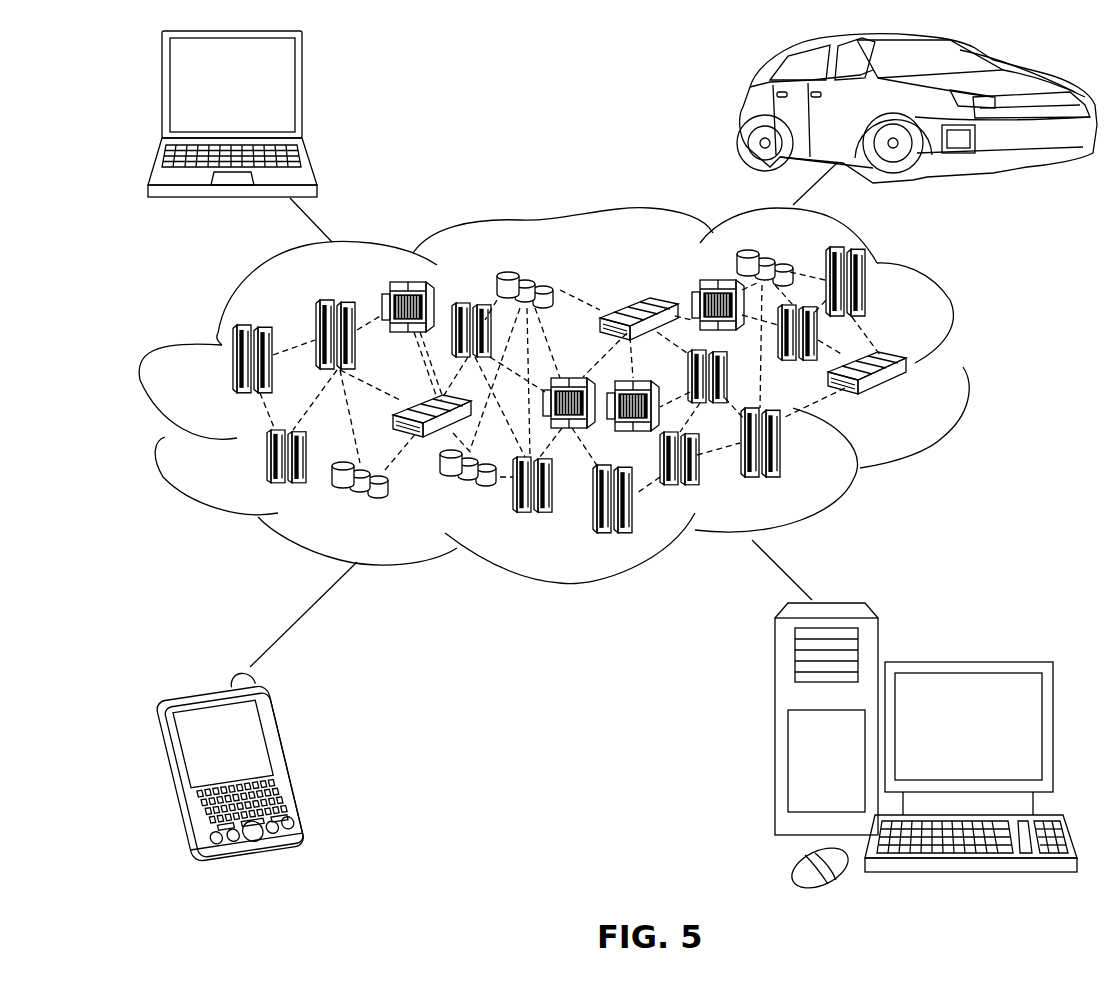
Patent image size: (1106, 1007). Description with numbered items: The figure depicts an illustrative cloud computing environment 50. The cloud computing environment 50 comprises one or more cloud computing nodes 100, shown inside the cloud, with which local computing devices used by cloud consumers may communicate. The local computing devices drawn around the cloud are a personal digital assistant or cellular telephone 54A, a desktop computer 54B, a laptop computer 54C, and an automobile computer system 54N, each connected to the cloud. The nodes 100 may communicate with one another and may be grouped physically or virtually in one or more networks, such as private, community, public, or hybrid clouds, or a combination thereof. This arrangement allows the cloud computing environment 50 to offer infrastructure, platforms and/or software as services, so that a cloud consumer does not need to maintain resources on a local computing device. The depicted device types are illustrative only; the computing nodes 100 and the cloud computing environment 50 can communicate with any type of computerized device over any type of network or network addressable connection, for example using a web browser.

The cloud computing environment 50 is at (965, 368).
The cloud computing nodes 100 is at (920, 403).
The personal digital assistant or cellular telephone 54A is at (292, 755).
The desktop computer 54B is at (966, 660).
The laptop computer 54C is at (302, 92).
The automobile computer system 54N is at (745, 108).